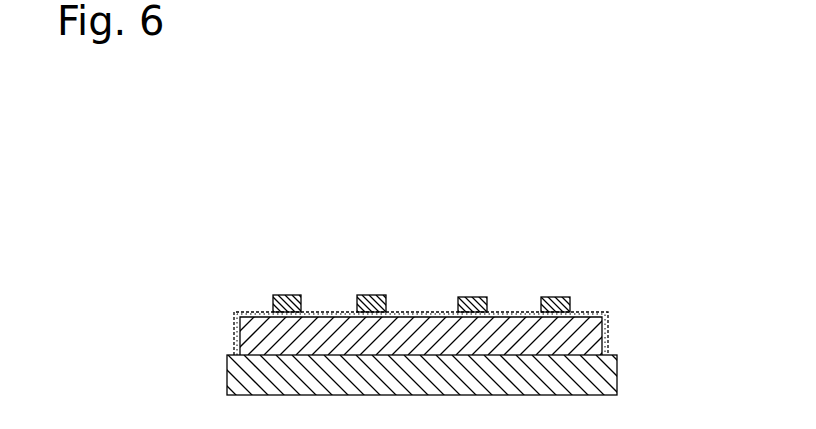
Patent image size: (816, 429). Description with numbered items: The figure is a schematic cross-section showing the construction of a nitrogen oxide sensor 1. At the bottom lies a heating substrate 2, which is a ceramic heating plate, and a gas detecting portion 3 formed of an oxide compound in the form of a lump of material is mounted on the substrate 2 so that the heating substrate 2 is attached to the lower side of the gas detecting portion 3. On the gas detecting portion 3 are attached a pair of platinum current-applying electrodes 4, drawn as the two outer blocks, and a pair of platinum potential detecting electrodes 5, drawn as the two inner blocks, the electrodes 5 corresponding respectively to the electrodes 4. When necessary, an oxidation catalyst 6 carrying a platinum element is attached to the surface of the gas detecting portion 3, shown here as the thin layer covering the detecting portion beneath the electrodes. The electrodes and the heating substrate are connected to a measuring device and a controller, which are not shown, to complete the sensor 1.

The sensor 1 is at (646, 210).
The heating substrate 2 is at (618, 382).
The gas detecting portion 3 is at (608, 328).
The current-applying electrodes 4 is at (289, 295).
The potential detecting electrodes 5 is at (370, 295).
The oxidation catalyst 6 is at (337, 312).